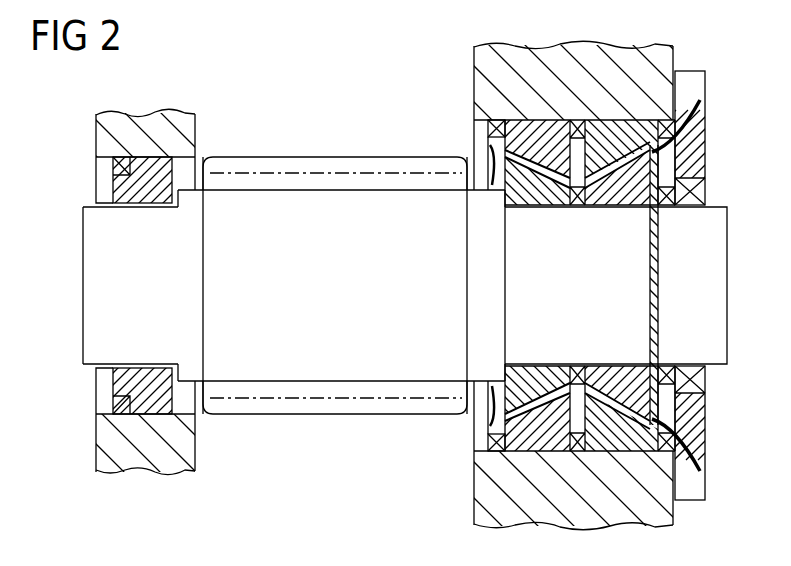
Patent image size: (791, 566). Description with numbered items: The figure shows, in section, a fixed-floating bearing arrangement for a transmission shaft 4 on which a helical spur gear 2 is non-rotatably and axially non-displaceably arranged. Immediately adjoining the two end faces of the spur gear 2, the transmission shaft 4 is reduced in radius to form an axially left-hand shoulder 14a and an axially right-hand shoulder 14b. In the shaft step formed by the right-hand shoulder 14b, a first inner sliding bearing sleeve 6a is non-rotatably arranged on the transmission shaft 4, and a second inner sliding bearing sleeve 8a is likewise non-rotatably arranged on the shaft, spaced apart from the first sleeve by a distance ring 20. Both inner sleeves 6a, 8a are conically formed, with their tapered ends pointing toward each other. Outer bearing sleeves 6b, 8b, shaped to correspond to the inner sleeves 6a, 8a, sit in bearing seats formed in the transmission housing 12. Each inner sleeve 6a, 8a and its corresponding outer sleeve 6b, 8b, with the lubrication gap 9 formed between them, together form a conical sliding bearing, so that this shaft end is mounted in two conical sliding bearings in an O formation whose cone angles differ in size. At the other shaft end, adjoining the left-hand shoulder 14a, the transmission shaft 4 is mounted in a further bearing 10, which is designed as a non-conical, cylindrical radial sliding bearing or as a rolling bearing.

The helical spur gear 2 is at (322, 240).
The transmission shaft 4 is at (702, 286).
The first inner sliding bearing sleeve 6a is at (516, 210).
The outer bearing sleeve 6b is at (497, 124).
The second inner sliding bearing sleeve 8a is at (636, 210).
The outer bearing sleeve 8b is at (705, 98).
The lubrication gap 9 is at (495, 150).
The further bearing 10 is at (127, 188).
The transmission housing 12 is at (612, 65).
The axially left-hand shoulder 14a is at (195, 417).
The axially right-hand shoulder 14b is at (478, 436).
The distance ring 20 is at (578, 210).